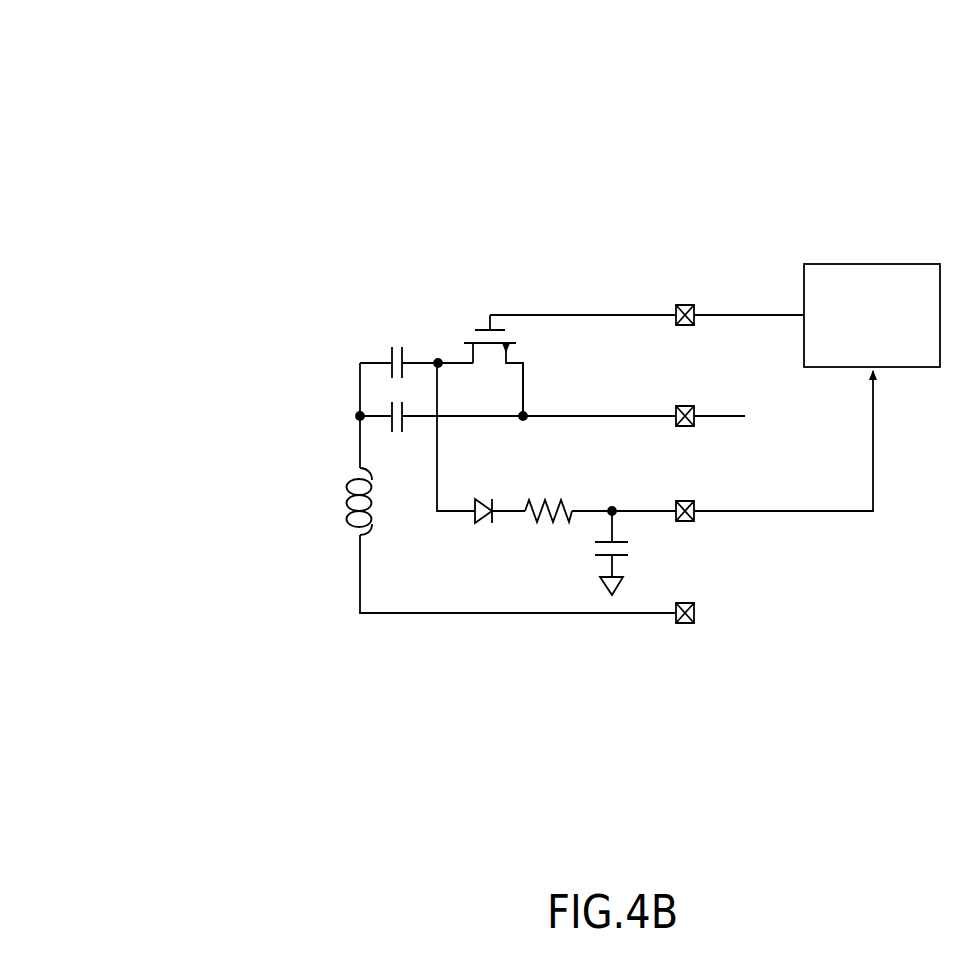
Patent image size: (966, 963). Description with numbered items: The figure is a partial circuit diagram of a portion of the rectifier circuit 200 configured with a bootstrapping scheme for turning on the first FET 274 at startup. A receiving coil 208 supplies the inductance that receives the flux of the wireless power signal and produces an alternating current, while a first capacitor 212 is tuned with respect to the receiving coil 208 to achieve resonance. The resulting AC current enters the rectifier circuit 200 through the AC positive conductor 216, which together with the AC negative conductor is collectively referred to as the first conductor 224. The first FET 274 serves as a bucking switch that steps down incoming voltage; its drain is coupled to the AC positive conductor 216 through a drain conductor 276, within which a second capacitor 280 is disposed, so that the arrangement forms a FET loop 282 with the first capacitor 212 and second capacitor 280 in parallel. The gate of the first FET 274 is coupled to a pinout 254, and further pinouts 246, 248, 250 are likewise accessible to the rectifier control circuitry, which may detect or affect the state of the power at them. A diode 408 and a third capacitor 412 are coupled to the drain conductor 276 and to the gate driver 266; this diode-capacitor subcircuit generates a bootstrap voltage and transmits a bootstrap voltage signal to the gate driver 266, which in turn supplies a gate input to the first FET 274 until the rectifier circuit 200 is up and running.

The rectifier circuit 200 is at (125, 52).
The receiving coil 208 is at (334, 494).
The first capacitor 212 is at (397, 430).
The AC positive conductor 216 is at (484, 426).
The first conductor 224 is at (552, 448).
The pinout 246 is at (666, 622).
The pinout 248 is at (666, 519).
The pinout 250 is at (665, 424).
The pinout 254 is at (665, 323).
The gate driver 266 is at (843, 291).
The first FET 274 is at (473, 285).
The drain conductor 276 is at (448, 323).
The second capacitor 280 is at (388, 340).
The FET loop 282 is at (487, 389).
The diode 408 is at (473, 525).
The third capacitor 412 is at (592, 562).